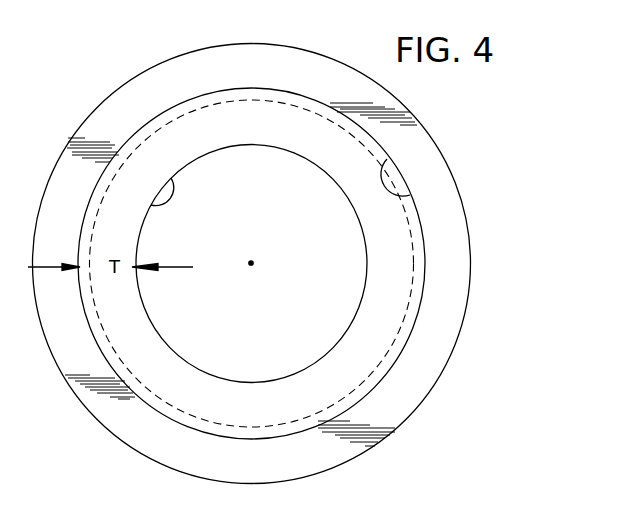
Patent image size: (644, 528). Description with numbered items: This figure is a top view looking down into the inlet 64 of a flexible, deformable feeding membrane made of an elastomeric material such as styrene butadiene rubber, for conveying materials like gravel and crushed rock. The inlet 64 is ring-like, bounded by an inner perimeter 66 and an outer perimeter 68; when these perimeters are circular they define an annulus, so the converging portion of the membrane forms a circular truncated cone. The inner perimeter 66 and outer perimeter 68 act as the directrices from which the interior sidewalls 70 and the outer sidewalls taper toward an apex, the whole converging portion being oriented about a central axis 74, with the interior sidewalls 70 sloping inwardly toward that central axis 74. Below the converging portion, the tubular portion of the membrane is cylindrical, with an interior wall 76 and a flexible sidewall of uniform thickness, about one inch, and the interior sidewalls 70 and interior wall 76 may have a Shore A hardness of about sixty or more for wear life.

The inlet 64 is at (449, 247).
The inner perimeter 66 is at (400, 197).
The outer perimeter 68 is at (464, 201).
The interior sidewalls 70 is at (163, 157).
The central axis 74 is at (255, 263).
The interior wall 76 is at (150, 207).